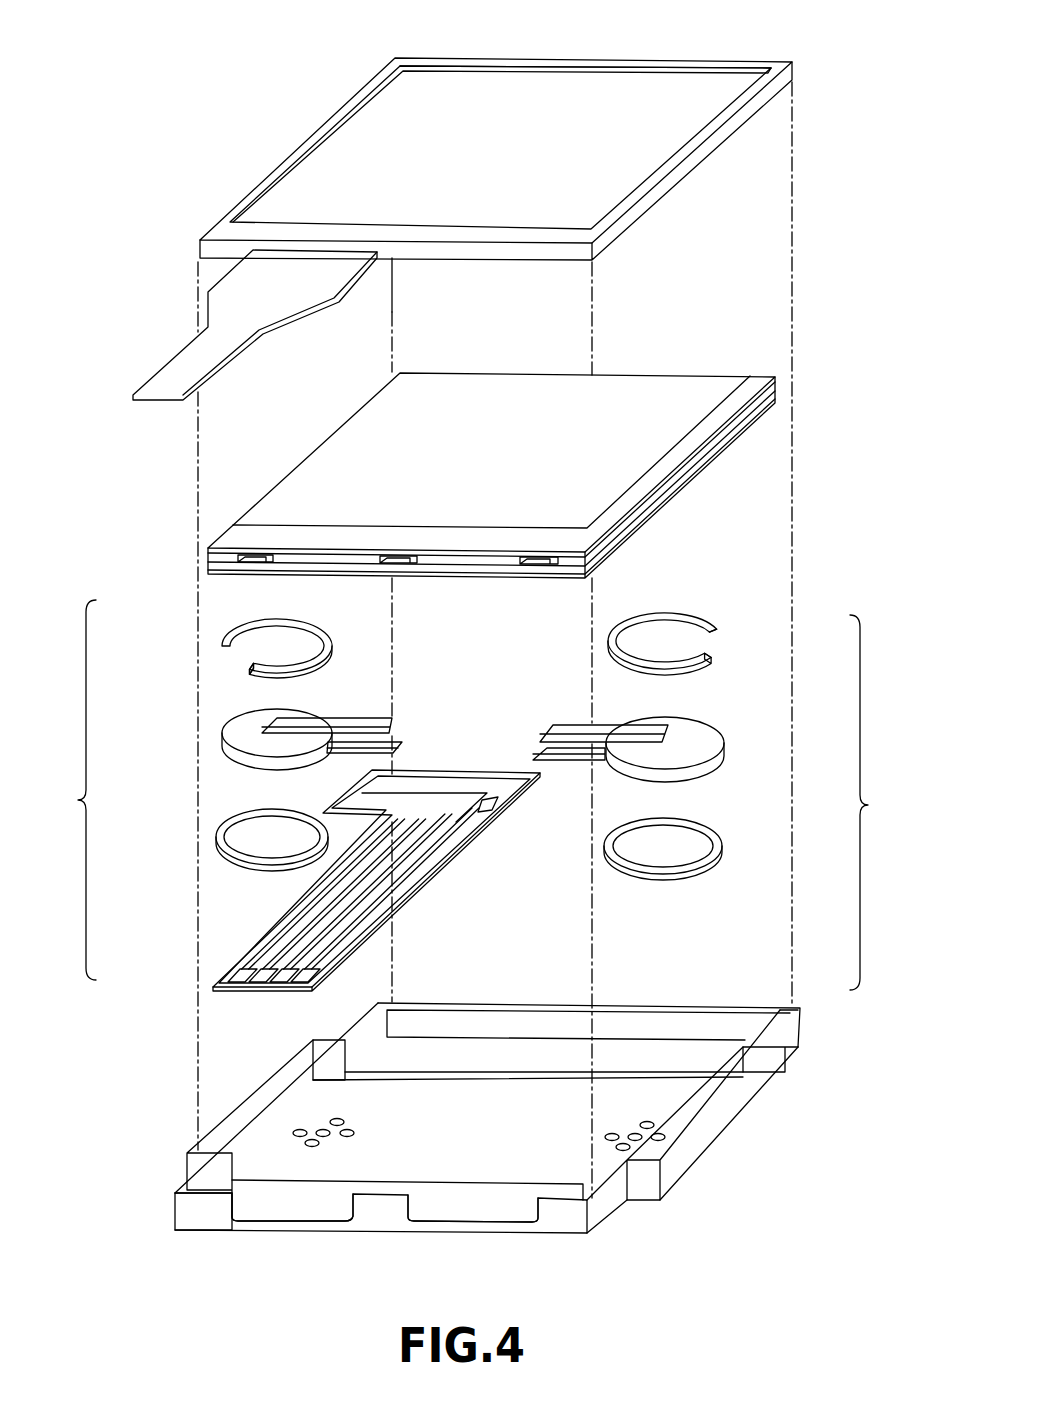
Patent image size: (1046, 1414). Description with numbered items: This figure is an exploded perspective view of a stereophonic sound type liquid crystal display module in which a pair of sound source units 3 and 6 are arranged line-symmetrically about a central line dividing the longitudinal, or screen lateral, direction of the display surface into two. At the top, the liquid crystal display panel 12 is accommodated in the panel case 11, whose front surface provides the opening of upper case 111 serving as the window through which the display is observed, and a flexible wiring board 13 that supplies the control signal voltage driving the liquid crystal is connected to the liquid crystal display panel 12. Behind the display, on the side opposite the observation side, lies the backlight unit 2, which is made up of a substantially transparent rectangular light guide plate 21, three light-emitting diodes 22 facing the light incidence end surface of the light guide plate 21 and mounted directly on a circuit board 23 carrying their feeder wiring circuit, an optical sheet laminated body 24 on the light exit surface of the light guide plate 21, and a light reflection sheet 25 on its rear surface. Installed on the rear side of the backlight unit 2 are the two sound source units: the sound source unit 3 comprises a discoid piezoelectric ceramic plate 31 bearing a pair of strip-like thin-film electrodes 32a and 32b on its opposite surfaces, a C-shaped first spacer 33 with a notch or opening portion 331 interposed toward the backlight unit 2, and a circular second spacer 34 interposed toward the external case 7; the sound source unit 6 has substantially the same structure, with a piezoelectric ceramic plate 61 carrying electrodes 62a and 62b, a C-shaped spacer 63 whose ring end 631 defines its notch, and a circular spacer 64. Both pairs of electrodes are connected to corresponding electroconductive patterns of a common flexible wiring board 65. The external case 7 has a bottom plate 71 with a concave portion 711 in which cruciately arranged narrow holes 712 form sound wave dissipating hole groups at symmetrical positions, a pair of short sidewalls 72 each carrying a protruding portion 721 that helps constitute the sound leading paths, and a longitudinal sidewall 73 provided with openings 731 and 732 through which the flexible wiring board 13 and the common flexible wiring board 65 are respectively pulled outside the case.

The opening of upper case 111 is at (592, 76).
The liquid crystal display panel 12 is at (337, 155).
The panel case 11 is at (233, 232).
The flexible wiring board 13 is at (228, 300).
The backlight unit 2 is at (632, 372).
The light guide plate 21 is at (723, 432).
The optical sheet laminated body 24 is at (703, 450).
The light reflection sheet 25 is at (663, 493).
The circuit board 23 is at (562, 533).
The light-emitting diodes 22 is at (255, 563).
The sound source unit 6 is at (74, 790).
The C-shaped spacer 63 is at (237, 637).
The ring end 631 is at (240, 667).
The piezoelectric ceramic plate 61 is at (233, 733).
The electrode 62a is at (357, 718).
The electrode 62b is at (395, 738).
The circular spacer 64 is at (220, 828).
The common flexible wiring board 65 is at (247, 958).
The sound source unit 3 is at (870, 802).
The first spacer 33 is at (705, 660).
The opening portion 331 is at (712, 654).
The piezoelectric ceramic plate 31 is at (708, 732).
The thin-film electrode 32a is at (563, 727).
The thin-film electrode 32b is at (533, 757).
The second spacer 34 is at (722, 852).
The external case 7 is at (590, 1235).
The bottom plate 71 is at (460, 1202).
The concave portion 711 is at (372, 1110).
The narrow holes 712 is at (322, 1130).
The short sidewall 72 is at (203, 1137).
The protruding portion 721 is at (312, 1043).
The longitudinal sidewall 73 is at (200, 1208).
The opening 731 is at (347, 1208).
The opening 732 is at (537, 1208).